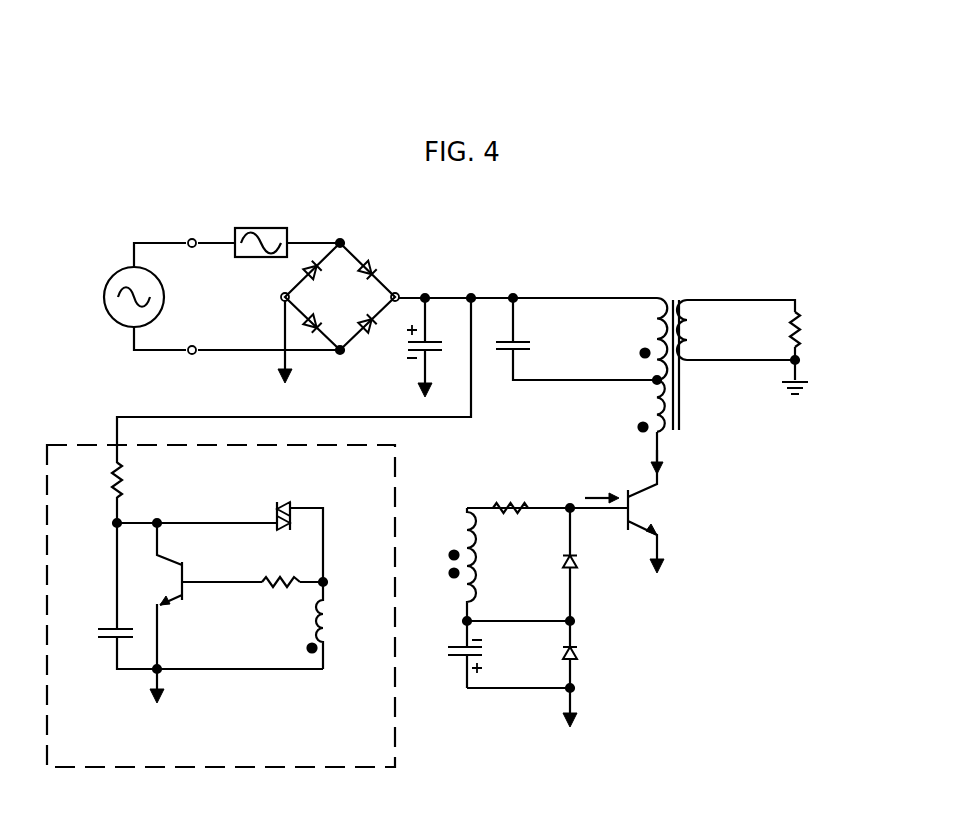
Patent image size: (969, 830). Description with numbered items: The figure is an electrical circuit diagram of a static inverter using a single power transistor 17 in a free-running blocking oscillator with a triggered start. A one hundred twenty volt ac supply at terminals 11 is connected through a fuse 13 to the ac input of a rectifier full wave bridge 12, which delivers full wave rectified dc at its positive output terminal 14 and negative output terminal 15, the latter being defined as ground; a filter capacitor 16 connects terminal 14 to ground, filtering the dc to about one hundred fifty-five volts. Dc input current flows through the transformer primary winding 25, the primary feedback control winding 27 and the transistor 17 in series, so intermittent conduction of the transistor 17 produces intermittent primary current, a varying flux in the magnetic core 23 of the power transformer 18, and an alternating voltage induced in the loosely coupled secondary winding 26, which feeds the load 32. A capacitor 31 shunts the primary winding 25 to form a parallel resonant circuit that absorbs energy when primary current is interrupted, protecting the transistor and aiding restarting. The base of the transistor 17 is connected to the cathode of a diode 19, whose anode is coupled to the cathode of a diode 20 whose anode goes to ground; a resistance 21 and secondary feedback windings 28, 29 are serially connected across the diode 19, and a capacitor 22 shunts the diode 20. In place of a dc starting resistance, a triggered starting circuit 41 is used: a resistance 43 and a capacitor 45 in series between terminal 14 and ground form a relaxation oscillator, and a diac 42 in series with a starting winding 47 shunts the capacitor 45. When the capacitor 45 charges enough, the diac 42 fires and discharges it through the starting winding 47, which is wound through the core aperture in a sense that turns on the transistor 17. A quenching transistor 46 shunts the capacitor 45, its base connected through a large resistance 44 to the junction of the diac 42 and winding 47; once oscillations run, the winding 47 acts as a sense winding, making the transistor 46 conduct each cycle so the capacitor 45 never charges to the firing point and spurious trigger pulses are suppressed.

The ac supply terminals 11 is at (190, 240).
The rectifier full wave bridge 12 is at (353, 309).
The fuse 13 is at (287, 240).
The positive output terminal 14 is at (396, 293).
The negative output terminal 15 is at (275, 338).
The filter capacitor 16 is at (427, 340).
The power transistor 17 is at (660, 487).
The power transformer 18 is at (673, 344).
The diode 19 is at (563, 561).
The diode 20 is at (562, 655).
The resistance 21 is at (490, 503).
The capacitor 22 is at (484, 650).
The magnetic core 23 is at (681, 418).
The primary winding 25 is at (657, 297).
The secondary winding 26 is at (692, 360).
The primary feedback control winding 27 is at (652, 412).
The secondary feedback winding 28 is at (465, 538).
The secondary feedback winding 29 is at (465, 590).
The capacitor 31 is at (511, 341).
The load 32 is at (800, 318).
The triggered starting circuit 41 is at (396, 460).
The diac 42 is at (272, 512).
The resistance 43 is at (110, 480).
The resistance 44 is at (270, 588).
The capacitor 45 is at (110, 642).
The transistor 46 is at (172, 560).
The starting winding 47 is at (333, 622).